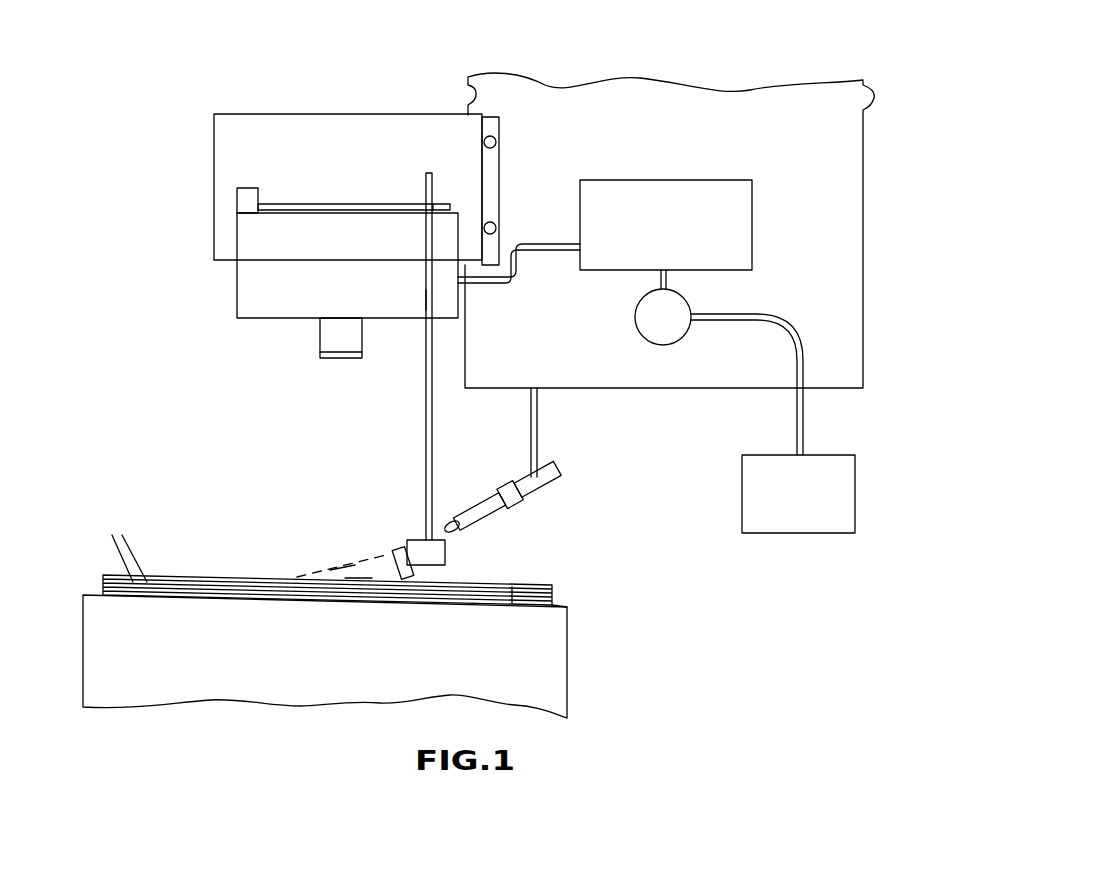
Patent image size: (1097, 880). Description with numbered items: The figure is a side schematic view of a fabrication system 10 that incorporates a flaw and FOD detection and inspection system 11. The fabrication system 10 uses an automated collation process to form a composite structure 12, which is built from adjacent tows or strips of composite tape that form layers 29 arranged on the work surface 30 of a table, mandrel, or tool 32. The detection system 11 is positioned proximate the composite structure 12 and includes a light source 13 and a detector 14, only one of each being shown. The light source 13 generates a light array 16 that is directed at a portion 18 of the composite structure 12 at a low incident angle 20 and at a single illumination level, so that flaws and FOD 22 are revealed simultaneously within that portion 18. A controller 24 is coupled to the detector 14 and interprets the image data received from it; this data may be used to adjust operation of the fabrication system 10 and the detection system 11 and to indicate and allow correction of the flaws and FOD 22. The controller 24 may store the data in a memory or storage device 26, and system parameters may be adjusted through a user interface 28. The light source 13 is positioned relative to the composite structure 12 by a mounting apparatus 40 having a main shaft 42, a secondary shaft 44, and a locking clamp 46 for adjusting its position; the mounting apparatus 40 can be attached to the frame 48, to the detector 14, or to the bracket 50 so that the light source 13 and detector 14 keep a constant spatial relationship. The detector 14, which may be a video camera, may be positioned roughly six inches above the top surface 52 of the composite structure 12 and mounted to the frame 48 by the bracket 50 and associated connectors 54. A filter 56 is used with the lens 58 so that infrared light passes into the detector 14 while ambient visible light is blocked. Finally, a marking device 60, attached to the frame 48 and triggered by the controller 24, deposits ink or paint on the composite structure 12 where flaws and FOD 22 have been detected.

The fabrication system 10 is at (758, 40).
The flaw and FOD detection and inspection system 11 is at (218, 446).
The composite structure 12 is at (553, 588).
The light source 13 is at (437, 540).
The detector 14 is at (262, 318).
The light array 16 is at (380, 548).
The portion of the composite structure 18 is at (355, 576).
The low incident angle 20 is at (325, 577).
The flaws and FOD 22 is at (372, 577).
The controller 24 is at (663, 180).
The memory or storage device 26 is at (688, 304).
The user interface 28 is at (828, 455).
The layers 29 is at (123, 549).
The work surface 30 is at (560, 600).
The tool 32 is at (83, 638).
The mounting apparatus 40 is at (433, 414).
The main shaft 42 is at (426, 300).
The secondary shaft 44 is at (333, 204).
The locking clamp 46 is at (425, 206).
The frame 48 is at (866, 180).
The bracket 50 is at (305, 113).
The top surface 52 is at (518, 585).
The connectors 54 is at (499, 132).
The filter 56 is at (335, 358).
The lens 58 is at (345, 358).
The marking device 60 is at (548, 475).